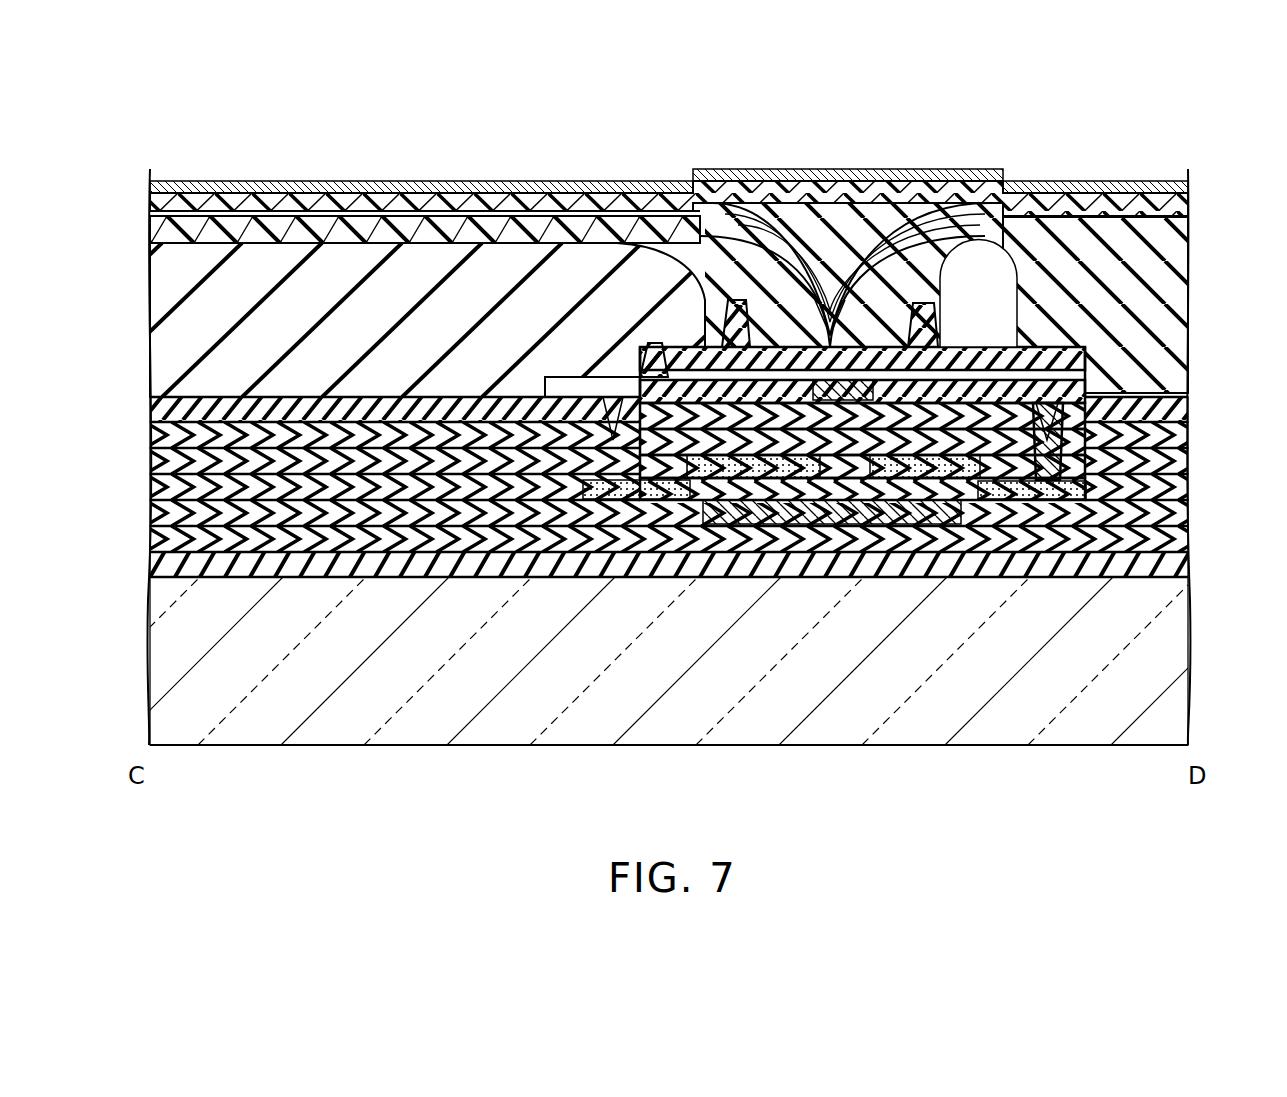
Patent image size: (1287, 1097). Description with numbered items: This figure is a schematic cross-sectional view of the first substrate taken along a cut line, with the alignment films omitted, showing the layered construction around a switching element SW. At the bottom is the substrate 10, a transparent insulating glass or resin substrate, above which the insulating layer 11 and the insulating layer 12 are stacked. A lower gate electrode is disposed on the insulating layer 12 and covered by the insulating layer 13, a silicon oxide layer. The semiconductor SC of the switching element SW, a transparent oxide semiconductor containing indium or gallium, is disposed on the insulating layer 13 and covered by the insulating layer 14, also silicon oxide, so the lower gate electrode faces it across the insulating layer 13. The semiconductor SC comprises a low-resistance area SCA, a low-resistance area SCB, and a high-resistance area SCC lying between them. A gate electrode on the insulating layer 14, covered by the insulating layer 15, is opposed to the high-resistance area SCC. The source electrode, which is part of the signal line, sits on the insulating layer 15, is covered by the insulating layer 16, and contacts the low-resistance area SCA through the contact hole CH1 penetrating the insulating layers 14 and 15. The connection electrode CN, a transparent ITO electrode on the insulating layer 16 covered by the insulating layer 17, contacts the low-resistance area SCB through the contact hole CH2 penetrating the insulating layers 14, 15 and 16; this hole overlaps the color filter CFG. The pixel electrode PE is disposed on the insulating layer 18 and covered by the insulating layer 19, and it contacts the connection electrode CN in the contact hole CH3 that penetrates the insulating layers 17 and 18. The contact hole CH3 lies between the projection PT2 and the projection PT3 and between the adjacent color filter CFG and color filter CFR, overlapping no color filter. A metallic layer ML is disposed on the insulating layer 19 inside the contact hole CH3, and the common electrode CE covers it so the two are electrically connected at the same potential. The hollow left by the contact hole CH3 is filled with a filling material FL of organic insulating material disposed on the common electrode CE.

The substrate 10 is at (1170, 664).
The insulating layer 11 is at (1186, 562).
The insulating layer 12 is at (1186, 536).
The insulating layer 13 is at (1186, 509).
The insulating layer 14 is at (1186, 482).
The insulating layer 15 is at (1186, 456).
The insulating layer 16 is at (1186, 430).
The insulating layer 17 is at (1186, 404).
The insulating layer 18 is at (1186, 262).
The insulating layer 19 is at (1186, 200).
The pixel electrode PE is at (262, 198).
The common electrode CE is at (331, 190).
The color filter CFG is at (414, 263).
The color filter CFR is at (1005, 286).
The contact hole CH1 is at (1047, 442).
The contact hole CH2 is at (614, 408).
The contact hole CH3 is at (835, 307).
The connection electrode CN is at (690, 370).
The projection PT3 is at (738, 300).
The projection PT2 is at (950, 265).
The filling material FL is at (838, 214).
The metallic layer ML is at (921, 300).
The semiconductor SC is at (914, 506).
The low-resistance area SCA is at (1035, 499).
The low-resistance area SCB is at (646, 499).
The high-resistance area SCC is at (808, 478).
The switching element SW is at (928, 542).